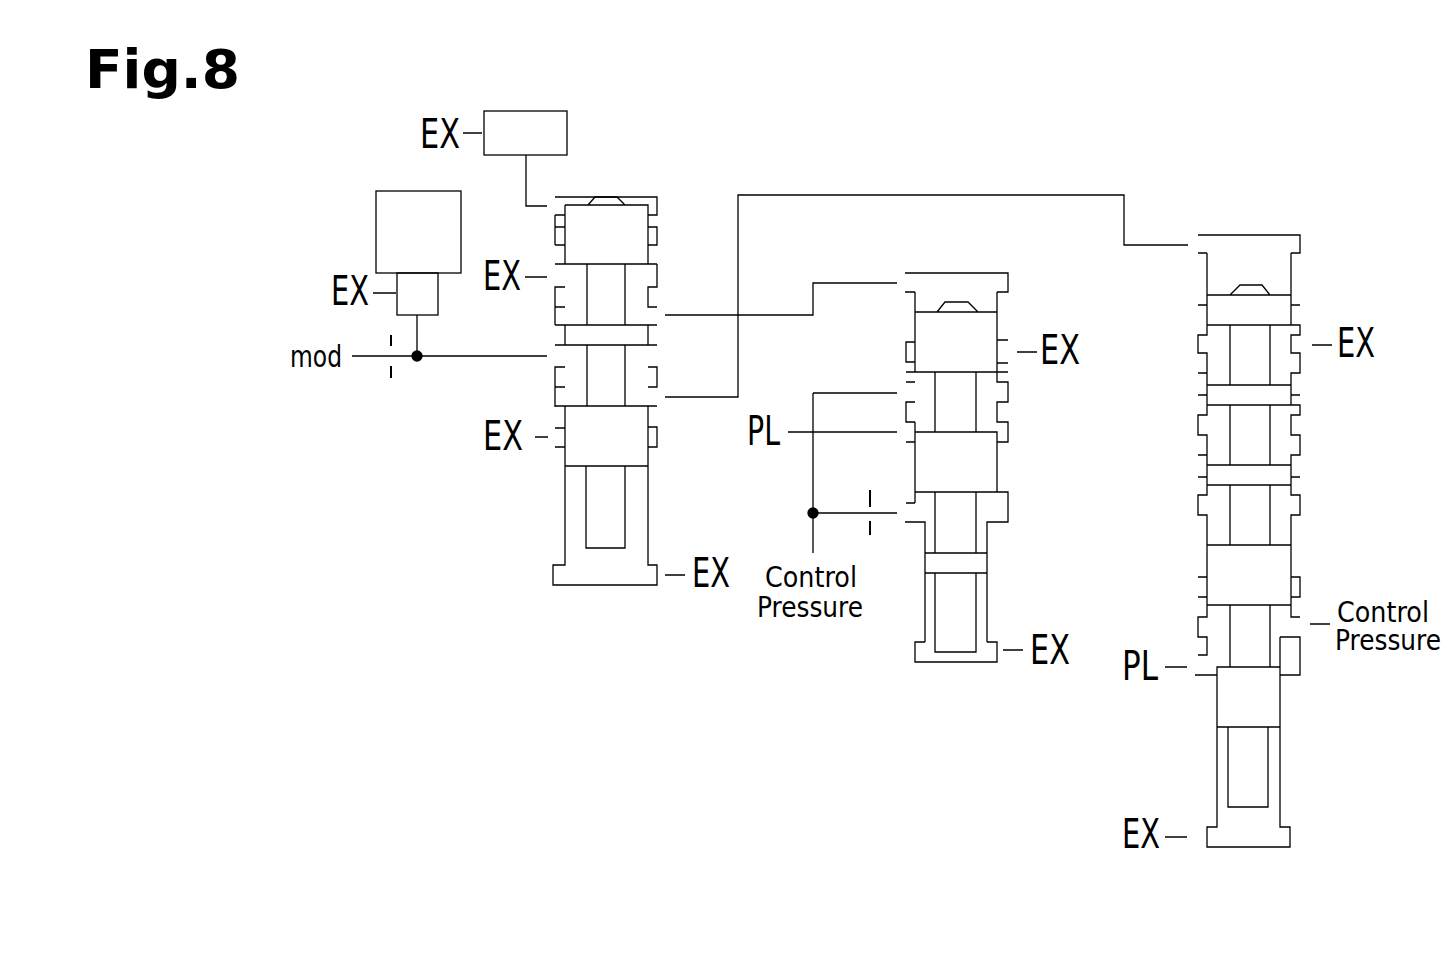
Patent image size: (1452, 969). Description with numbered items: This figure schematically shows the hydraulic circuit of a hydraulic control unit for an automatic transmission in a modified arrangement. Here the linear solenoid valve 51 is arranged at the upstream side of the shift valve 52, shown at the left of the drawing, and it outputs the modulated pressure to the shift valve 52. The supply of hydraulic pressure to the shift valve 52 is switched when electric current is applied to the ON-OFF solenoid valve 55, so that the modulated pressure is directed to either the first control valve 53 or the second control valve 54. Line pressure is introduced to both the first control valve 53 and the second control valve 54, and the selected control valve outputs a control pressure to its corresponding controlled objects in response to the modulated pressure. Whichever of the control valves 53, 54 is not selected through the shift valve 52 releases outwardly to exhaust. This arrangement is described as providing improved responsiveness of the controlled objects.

The linear solenoid valve 51 is at (377, 228).
The shift valve 52 is at (573, 197).
The first control valve 53 is at (922, 273).
The second control valve 54 is at (1215, 235).
The ON-OFF solenoid valve 55 is at (522, 111).